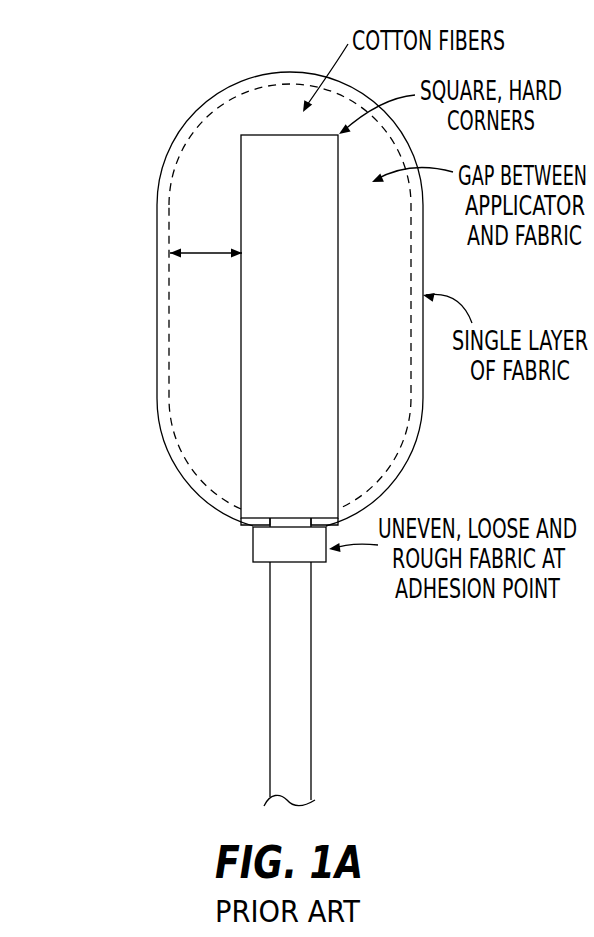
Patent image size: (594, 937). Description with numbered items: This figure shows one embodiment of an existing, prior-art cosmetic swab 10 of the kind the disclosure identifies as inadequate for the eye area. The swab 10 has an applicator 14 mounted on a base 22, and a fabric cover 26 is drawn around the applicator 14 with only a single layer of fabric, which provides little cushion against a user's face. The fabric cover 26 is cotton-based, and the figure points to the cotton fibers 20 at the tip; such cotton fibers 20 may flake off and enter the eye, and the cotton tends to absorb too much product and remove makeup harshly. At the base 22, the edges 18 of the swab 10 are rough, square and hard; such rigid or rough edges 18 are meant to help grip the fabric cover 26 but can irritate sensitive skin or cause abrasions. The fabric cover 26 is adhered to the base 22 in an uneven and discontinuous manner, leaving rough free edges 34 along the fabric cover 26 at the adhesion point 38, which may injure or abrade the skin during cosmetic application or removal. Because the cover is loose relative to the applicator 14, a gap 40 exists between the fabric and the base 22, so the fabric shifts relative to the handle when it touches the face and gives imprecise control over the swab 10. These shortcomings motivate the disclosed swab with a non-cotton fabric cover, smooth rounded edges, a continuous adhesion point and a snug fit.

The swab 10 is at (150, 59).
The applicator 14 is at (205, 200).
The edges 18 is at (241, 353).
The cotton fibers 20 is at (242, 136).
The base 22 is at (300, 667).
The fabric cover 26 is at (170, 124).
The rough free edges 34 is at (262, 566).
The adhesion point 38 is at (267, 543).
The gap 40 is at (200, 257).